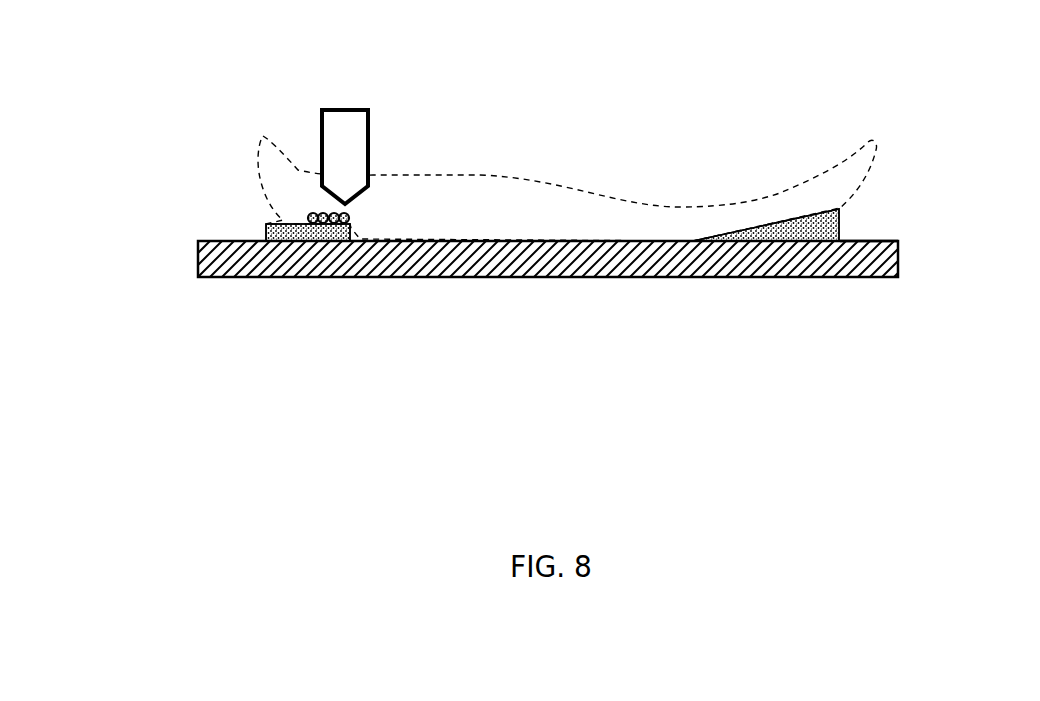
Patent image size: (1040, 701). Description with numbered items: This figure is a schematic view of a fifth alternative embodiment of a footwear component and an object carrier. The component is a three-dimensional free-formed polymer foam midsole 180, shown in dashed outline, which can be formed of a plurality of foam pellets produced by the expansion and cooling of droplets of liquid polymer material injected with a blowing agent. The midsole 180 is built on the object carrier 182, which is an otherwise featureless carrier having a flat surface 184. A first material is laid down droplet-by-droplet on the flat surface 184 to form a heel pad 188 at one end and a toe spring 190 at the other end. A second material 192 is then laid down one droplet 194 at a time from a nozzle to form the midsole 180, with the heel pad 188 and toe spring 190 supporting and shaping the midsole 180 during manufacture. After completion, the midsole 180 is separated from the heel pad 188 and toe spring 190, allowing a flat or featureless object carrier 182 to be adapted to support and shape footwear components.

The midsole 180 is at (878, 138).
The object carrier 182 is at (194, 265).
The flat surface 184 is at (885, 241).
The heel pad 188 is at (267, 238).
The toe spring 190 is at (840, 225).
The second material 192 is at (317, 218).
The droplet 194 is at (352, 217).